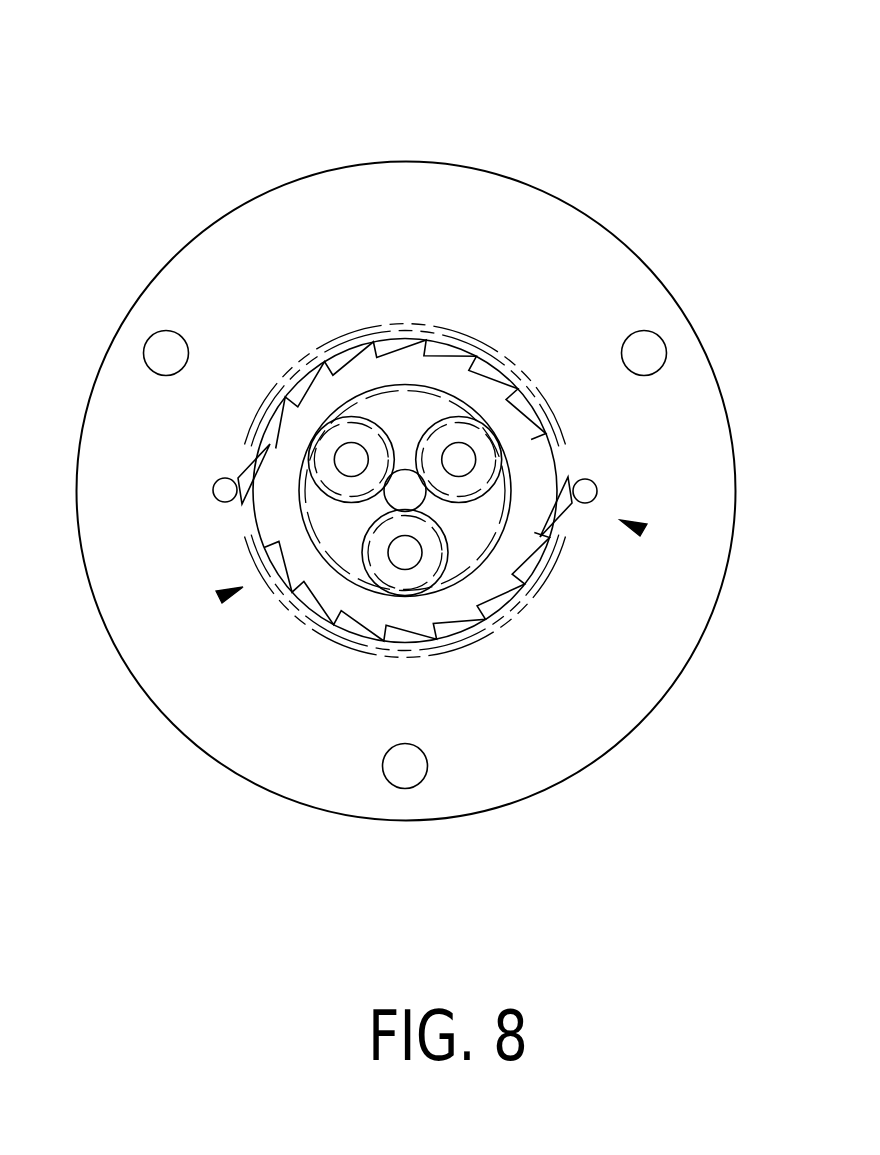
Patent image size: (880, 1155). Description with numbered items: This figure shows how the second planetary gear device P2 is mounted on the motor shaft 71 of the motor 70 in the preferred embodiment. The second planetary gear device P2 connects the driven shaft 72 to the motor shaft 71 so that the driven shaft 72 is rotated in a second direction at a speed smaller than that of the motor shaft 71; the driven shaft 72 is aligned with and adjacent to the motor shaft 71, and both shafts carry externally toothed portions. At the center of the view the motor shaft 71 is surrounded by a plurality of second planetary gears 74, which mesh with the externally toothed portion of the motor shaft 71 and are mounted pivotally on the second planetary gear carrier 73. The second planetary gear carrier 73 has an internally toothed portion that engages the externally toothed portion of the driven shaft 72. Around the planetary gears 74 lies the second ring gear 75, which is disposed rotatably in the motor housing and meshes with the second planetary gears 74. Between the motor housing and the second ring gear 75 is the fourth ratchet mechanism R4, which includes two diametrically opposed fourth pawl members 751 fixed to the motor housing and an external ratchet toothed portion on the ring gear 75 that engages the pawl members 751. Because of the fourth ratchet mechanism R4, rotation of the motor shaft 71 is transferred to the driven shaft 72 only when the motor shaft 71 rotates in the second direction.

The motor 70 is at (560, 198).
The motor shaft 71 is at (403, 482).
The driven shaft 72 is at (324, 299).
The second planetary gear carrier 73 is at (470, 535).
The second planetary gears 74 is at (457, 428).
The second ring gear 75 is at (367, 613).
The fourth pawl members 751 is at (553, 528).
The second planetary gear device P2 is at (243, 587).
The fourth ratchet mechanism R4 is at (620, 520).